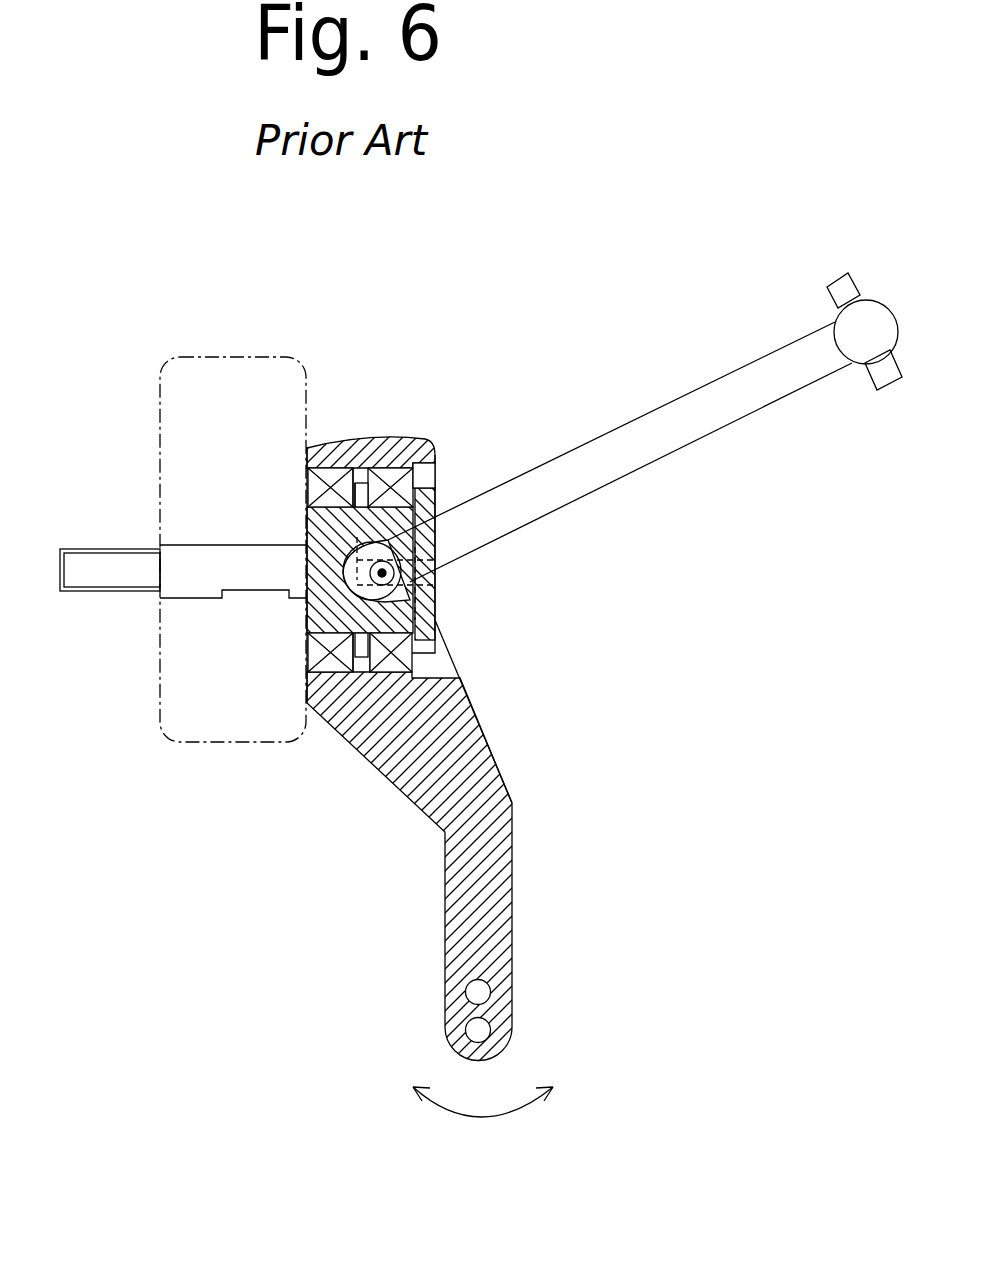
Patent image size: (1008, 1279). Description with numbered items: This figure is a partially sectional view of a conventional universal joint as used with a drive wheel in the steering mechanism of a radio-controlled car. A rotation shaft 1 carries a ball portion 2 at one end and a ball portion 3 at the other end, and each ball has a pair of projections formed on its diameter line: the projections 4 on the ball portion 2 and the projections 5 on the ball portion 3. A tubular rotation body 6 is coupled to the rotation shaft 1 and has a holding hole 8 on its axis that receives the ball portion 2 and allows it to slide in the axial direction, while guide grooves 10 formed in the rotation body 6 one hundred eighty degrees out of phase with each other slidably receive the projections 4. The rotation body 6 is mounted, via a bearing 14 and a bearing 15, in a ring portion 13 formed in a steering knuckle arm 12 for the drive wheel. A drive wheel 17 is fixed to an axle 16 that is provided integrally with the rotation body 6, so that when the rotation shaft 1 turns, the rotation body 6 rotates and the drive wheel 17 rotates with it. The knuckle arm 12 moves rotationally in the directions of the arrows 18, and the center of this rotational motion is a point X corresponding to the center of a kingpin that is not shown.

The rotation shaft 1 is at (617, 462).
The ball portion 2 is at (408, 601).
The ball portion 3 is at (877, 318).
The projections 4 is at (379, 495).
The projections 5 is at (842, 290).
The rotation body 6 is at (325, 640).
The holding hole 8 is at (366, 640).
The guide grooves 10 is at (335, 500).
The steering knuckle arm 12 is at (480, 785).
The ring portion 13 is at (428, 452).
The bearing 14 is at (400, 640).
The bearing 15 is at (315, 487).
The axle 16 is at (226, 559).
The drive wheel 17 is at (181, 727).
The arrows 18 is at (478, 1120).
The point X is at (386, 572).